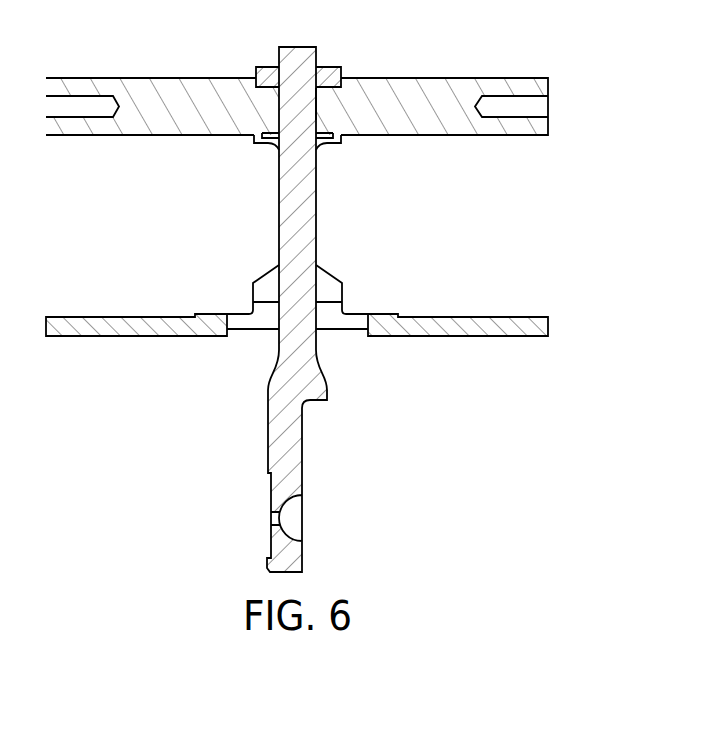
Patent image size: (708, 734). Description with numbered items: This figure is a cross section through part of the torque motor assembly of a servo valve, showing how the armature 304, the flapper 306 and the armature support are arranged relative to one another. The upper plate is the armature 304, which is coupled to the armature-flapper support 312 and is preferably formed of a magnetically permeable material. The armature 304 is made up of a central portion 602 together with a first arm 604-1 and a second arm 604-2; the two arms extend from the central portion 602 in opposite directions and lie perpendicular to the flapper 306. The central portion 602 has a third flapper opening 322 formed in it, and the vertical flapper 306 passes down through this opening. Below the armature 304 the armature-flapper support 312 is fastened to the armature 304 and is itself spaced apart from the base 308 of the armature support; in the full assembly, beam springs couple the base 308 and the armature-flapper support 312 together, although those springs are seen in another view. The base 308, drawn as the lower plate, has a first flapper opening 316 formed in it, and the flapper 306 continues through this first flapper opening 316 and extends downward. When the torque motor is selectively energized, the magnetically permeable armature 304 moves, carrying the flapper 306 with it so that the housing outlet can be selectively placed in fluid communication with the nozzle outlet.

The armature 304 is at (332, 82).
The flapper 306 is at (303, 458).
The base 308 is at (499, 322).
The armature-flapper support 312 is at (330, 69).
The first flapper opening 316 is at (360, 337).
The third flapper opening 322 is at (318, 100).
The central portion 602 is at (205, 136).
The first arm 604-1 is at (140, 86).
The second arm 604-2 is at (467, 84).